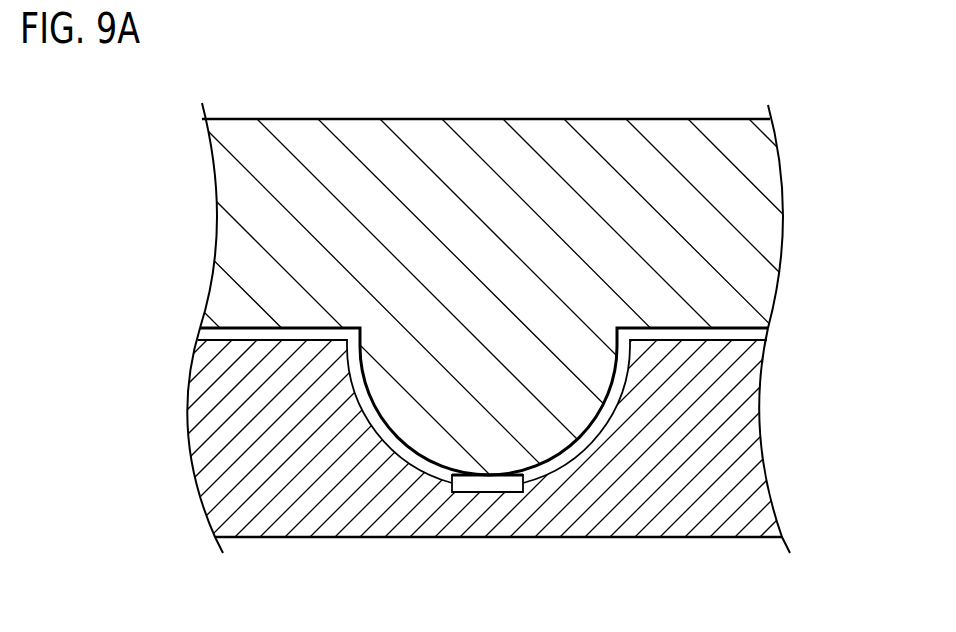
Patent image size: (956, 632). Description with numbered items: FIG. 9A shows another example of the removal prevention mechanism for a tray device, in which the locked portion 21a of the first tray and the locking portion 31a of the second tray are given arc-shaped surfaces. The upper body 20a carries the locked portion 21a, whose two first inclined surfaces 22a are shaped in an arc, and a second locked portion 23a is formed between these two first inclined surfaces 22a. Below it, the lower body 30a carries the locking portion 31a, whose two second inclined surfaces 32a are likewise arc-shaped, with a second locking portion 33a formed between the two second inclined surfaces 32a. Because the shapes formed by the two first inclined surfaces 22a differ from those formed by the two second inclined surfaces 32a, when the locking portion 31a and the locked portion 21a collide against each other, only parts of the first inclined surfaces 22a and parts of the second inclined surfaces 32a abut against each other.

The upper mold body 20a is at (786, 187).
The locked portion 21a is at (588, 76).
The first inclined surfaces 22a is at (366, 378).
The second locked portion 23a is at (470, 475).
The lower mold body 30a is at (761, 437).
The locking portion 31a is at (580, 538).
The second inclined surfaces 32a is at (372, 420).
The second locking portion 33a is at (482, 492).